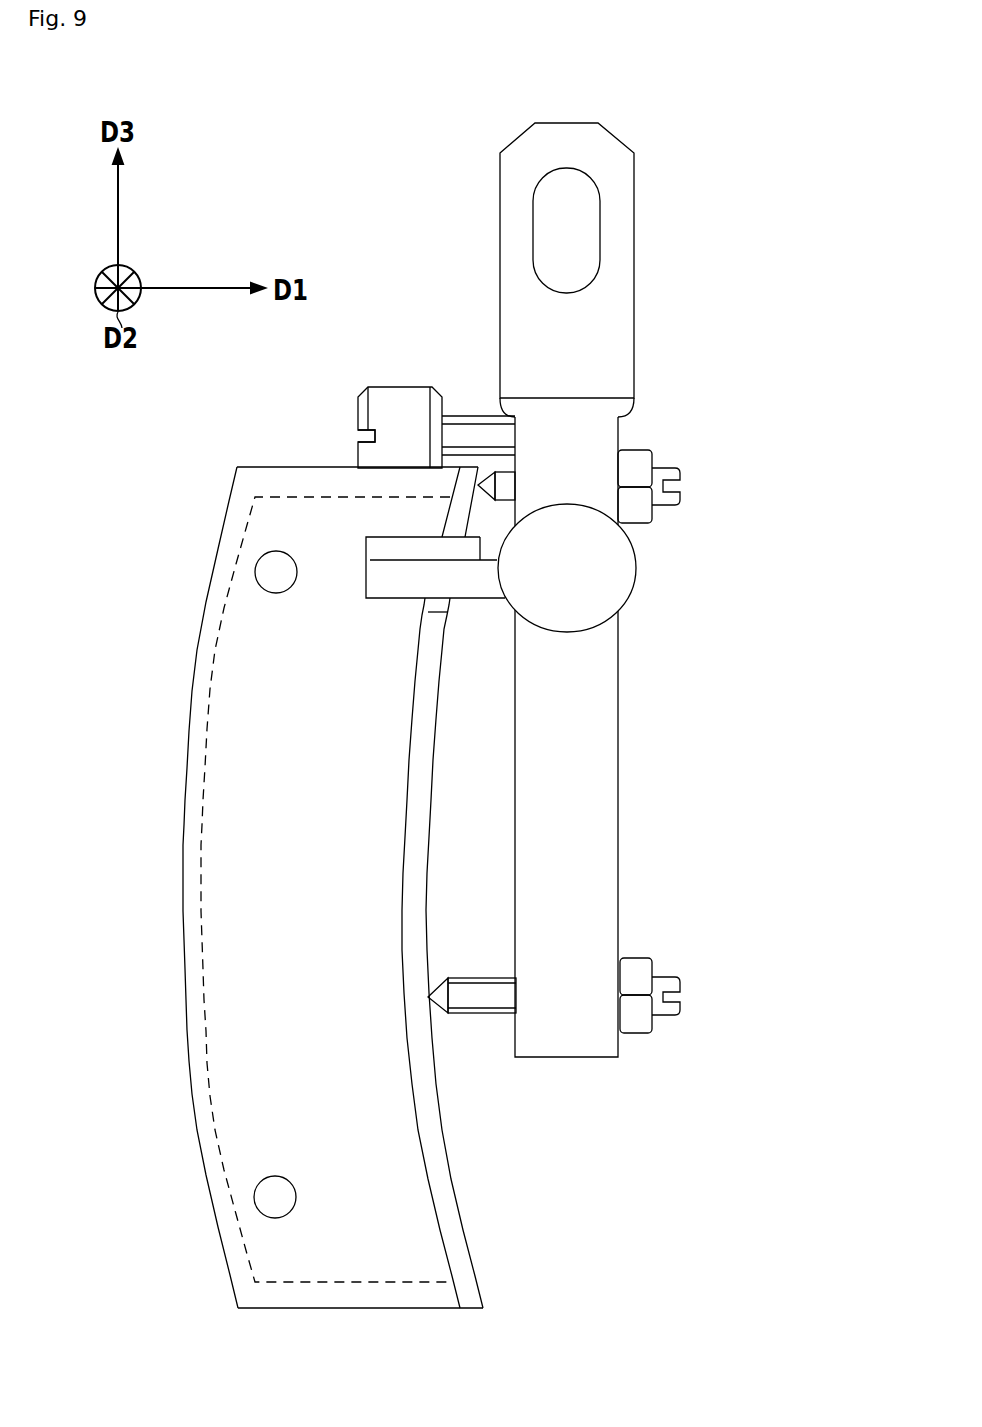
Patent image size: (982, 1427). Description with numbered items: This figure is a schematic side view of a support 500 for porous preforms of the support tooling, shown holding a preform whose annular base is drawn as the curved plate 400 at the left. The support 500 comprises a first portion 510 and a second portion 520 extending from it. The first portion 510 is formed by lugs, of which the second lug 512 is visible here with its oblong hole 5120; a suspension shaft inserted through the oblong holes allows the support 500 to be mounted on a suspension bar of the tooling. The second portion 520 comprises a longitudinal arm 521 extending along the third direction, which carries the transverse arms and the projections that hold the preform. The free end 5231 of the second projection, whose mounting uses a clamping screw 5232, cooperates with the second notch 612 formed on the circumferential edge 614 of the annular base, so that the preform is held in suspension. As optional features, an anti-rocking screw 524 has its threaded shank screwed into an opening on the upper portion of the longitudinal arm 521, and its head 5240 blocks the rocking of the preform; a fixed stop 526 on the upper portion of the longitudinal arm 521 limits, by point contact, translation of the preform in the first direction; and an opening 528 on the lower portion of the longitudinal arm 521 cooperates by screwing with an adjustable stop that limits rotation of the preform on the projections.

The panel 400 is at (165, 915).
The support 500 is at (476, 152).
The first portion 510 is at (633, 270).
The second lug 512 is at (614, 325).
The oblong hole 5120 is at (588, 232).
The second portion 520 is at (516, 669).
The longitudinal arm 521 is at (598, 880).
The anti-rocking screw 524 is at (397, 374).
The head 5240 is at (385, 415).
The fixed stop 526 is at (500, 485).
The free end 5231 is at (398, 587).
The clamping screw 5232 is at (608, 566).
The opening 528 is at (478, 985).
The second notch 612 is at (438, 603).
The circumferential edge 614 is at (443, 1172).